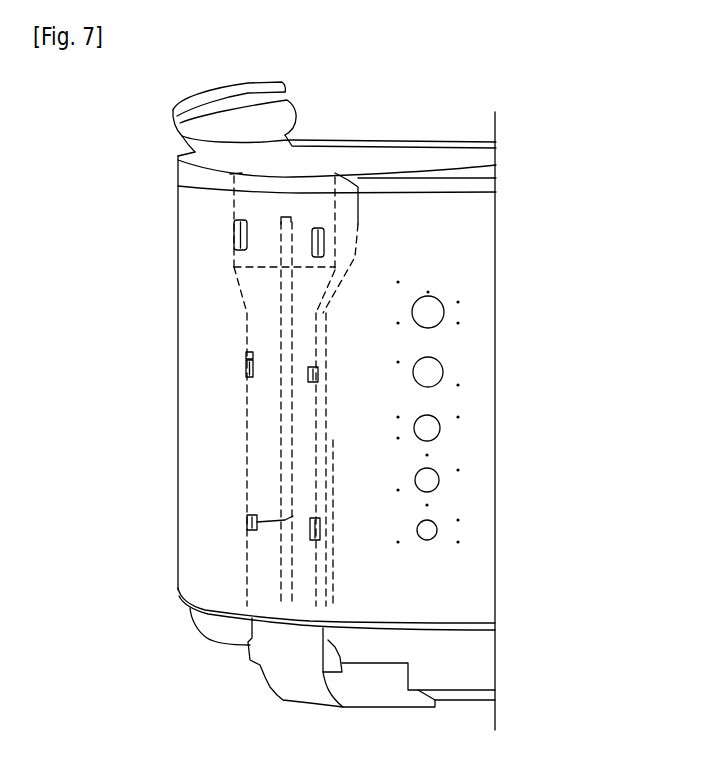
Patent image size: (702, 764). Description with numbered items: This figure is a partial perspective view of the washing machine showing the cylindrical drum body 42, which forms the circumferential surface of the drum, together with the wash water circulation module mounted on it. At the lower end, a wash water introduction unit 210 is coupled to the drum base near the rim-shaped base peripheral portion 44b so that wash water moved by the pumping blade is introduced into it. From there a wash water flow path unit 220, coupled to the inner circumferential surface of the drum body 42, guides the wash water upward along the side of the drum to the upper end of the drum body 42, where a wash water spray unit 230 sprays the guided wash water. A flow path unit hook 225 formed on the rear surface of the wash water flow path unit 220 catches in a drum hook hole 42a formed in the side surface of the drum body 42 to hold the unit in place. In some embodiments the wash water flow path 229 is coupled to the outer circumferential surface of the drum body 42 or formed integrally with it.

The drum body 42 is at (195, 147).
The drum hook hole 42a is at (243, 348).
The wash water spray unit 230 is at (240, 205).
The flow path unit hook 225 is at (247, 372).
The wash water flow path unit 220 is at (257, 467).
The wash water flow path 229 is at (250, 522).
The base peripheral portion 44b is at (217, 633).
The wash water introduction unit 210 is at (292, 680).